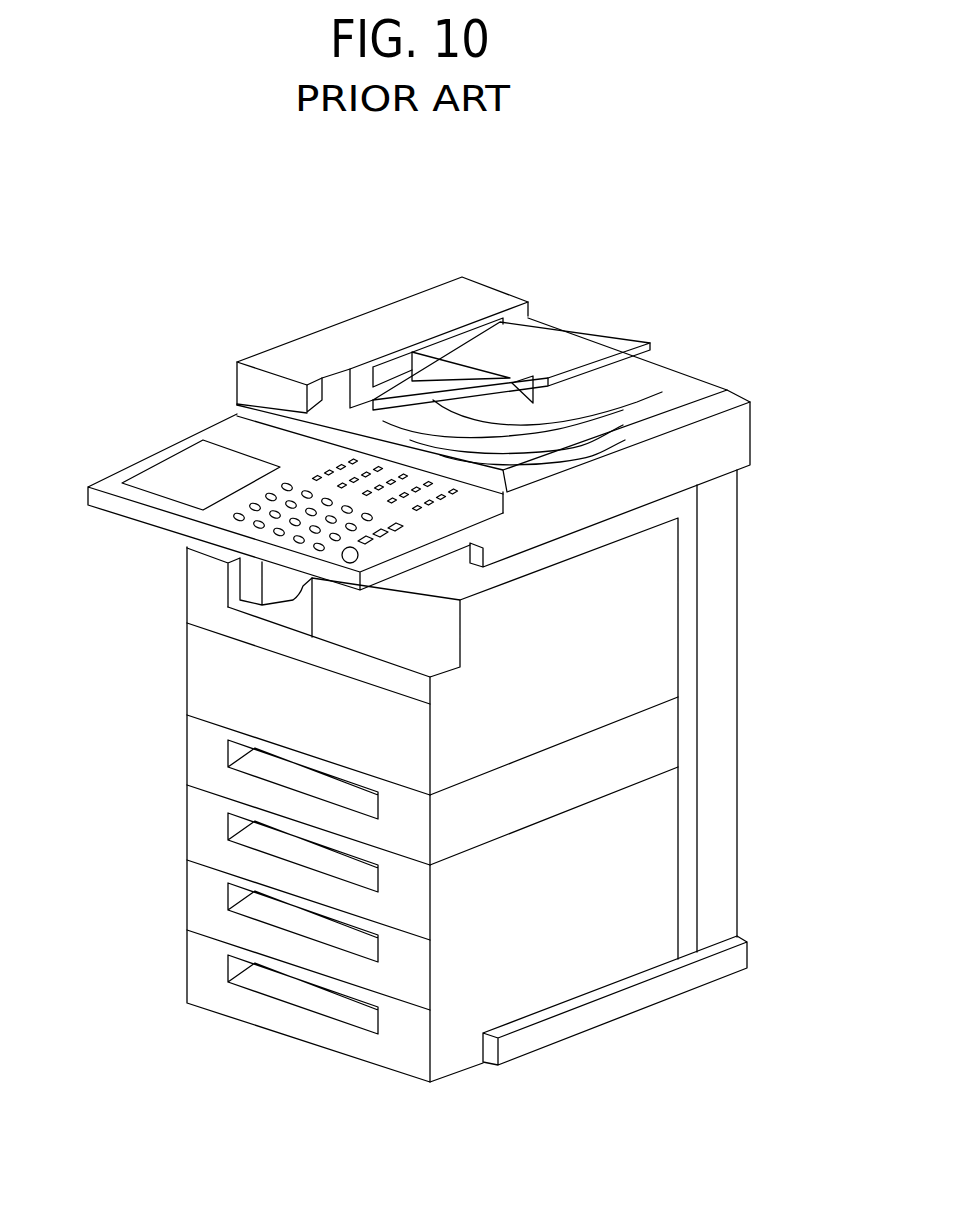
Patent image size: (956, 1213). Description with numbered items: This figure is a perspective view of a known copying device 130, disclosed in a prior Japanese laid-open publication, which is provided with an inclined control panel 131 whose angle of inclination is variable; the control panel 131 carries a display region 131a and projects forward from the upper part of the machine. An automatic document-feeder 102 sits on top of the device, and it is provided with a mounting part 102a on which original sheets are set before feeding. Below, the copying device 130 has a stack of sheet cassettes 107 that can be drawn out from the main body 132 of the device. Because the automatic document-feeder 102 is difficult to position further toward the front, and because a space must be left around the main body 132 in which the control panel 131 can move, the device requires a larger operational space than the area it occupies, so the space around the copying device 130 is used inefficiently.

The copying device 130 is at (519, 258).
The automatic document-feeder 102 is at (411, 294).
The mounting part 102a is at (558, 323).
The control panel 131 is at (228, 424).
The display section 131a is at (171, 471).
The main body 132 is at (753, 433).
The sheet cassettes 107 is at (195, 754).